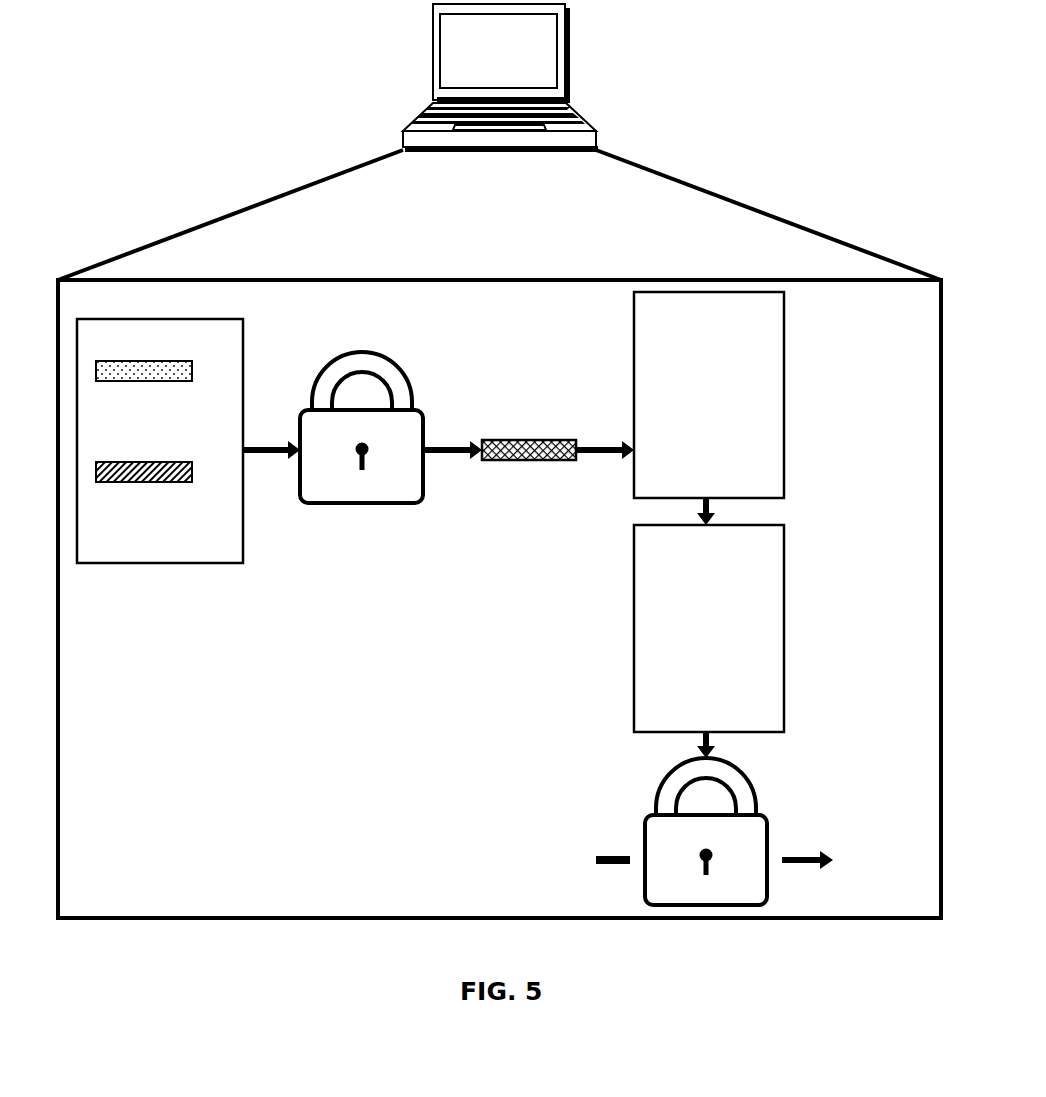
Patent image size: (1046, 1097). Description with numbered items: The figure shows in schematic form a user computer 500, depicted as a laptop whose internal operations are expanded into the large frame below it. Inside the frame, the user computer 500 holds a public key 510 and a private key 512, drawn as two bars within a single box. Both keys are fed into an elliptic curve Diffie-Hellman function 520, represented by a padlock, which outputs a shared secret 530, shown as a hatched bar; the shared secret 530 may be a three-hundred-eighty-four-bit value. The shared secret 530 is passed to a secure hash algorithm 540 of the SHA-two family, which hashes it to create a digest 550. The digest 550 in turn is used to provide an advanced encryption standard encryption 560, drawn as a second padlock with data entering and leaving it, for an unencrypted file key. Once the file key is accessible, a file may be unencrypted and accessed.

The user computer 500 is at (744, 158).
The public key 510 is at (128, 389).
The private key 512 is at (140, 490).
The elliptic curve Diffie-Hellman (ECDH) function 520 is at (352, 512).
The shared secret 530 is at (520, 464).
The SHA-2 (SHA-256) hashing algorithm 540 is at (784, 382).
The digest 550 is at (784, 584).
The AES-256-CBC encryption 560 is at (755, 778).